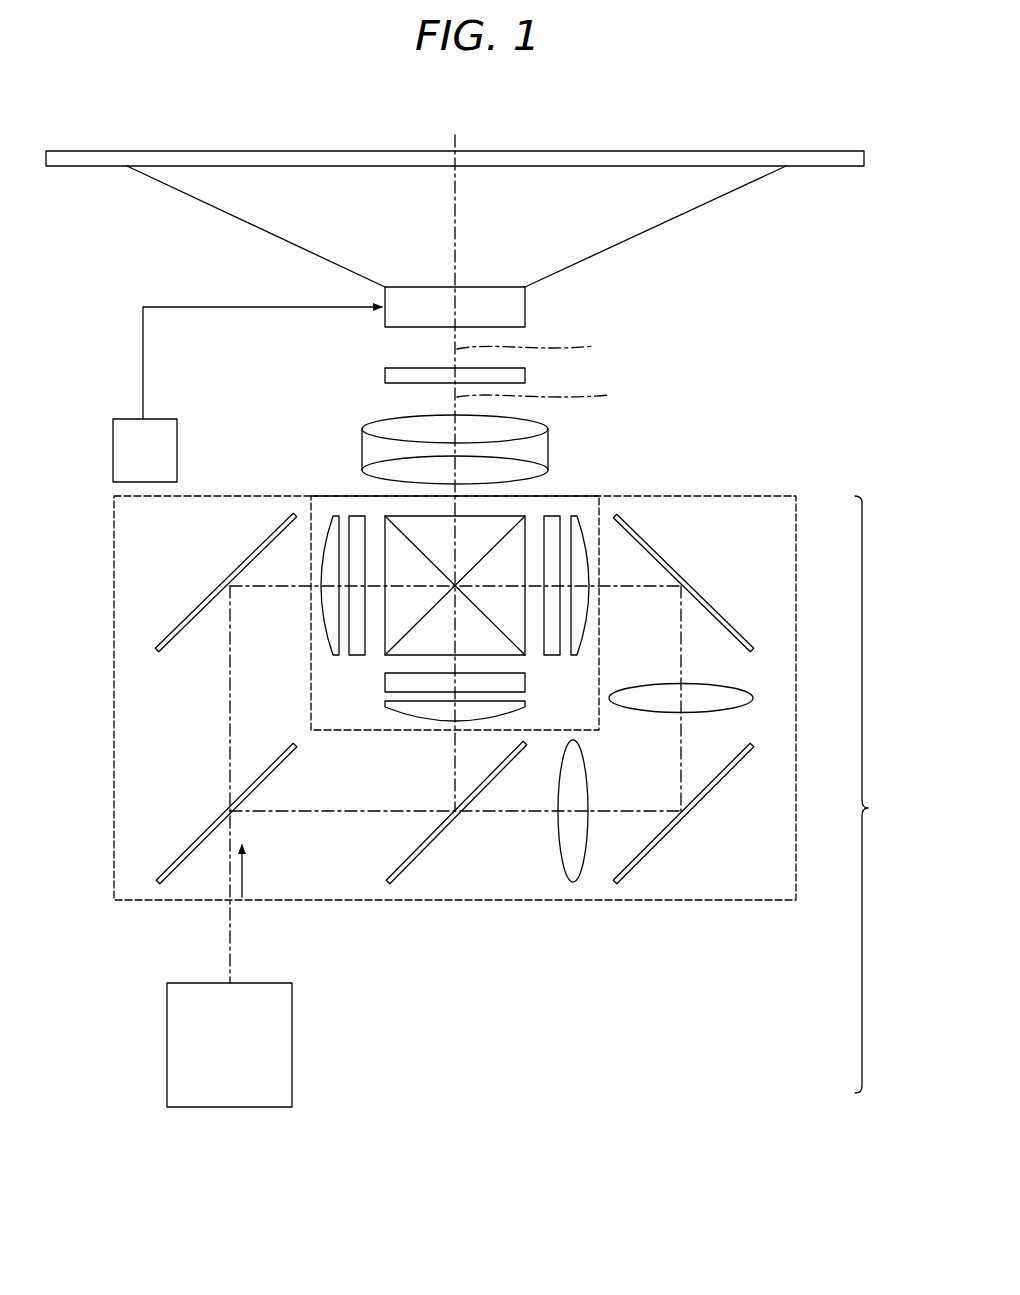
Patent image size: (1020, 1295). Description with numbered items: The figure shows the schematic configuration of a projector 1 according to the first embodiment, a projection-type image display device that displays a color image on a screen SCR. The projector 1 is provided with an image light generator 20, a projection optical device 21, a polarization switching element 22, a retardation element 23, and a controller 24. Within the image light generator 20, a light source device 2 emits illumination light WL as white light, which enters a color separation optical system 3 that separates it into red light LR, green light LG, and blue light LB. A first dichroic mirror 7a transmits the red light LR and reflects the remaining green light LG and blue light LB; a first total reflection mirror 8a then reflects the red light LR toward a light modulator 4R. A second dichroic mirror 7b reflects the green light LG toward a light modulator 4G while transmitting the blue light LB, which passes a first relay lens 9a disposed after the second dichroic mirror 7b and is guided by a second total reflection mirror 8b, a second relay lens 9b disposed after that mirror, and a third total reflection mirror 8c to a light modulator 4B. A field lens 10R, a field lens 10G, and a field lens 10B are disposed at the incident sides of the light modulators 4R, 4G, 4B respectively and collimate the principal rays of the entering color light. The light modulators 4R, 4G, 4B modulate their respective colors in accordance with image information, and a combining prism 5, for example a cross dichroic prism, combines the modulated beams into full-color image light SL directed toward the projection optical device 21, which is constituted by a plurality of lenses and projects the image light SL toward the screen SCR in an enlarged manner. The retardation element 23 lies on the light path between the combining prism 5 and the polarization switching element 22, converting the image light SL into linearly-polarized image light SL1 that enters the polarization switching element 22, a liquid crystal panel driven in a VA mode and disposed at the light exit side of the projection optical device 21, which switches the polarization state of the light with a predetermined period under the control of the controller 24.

The projector 1 is at (768, 128).
The screen SCR is at (832, 166).
The polarization switching element 22 is at (525, 306).
The retardation element 23 is at (525, 376).
The projection optical device 21 is at (528, 432).
The controller 24 is at (177, 440).
The color separation optical system 3 is at (114, 643).
The image light generator 20 is at (880, 794).
The light source device 2 is at (292, 1077).
The combining prism 5 is at (478, 524).
The light modulator 4R is at (356, 514).
The light modulator 4G is at (385, 683).
The light modulator 4B is at (552, 514).
The field lens 10R is at (330, 514).
The field lens 10G is at (385, 703).
The field lens 10B is at (578, 514).
The first dichroic mirror 7a is at (190, 845).
The second dichroic mirror 7b is at (432, 843).
The first total reflection mirror 8a is at (203, 600).
The second total reflection mirror 8b is at (720, 842).
The third total reflection mirror 8c is at (710, 605).
The first relay lens 9a is at (558, 833).
The second relay lens 9b is at (740, 691).
The illumination light WL is at (243, 873).
The red light LR is at (229, 723).
The green light LG is at (455, 771).
The blue light LB is at (681, 766).
The image light SL is at (618, 394).
The image light SL1 is at (618, 344).